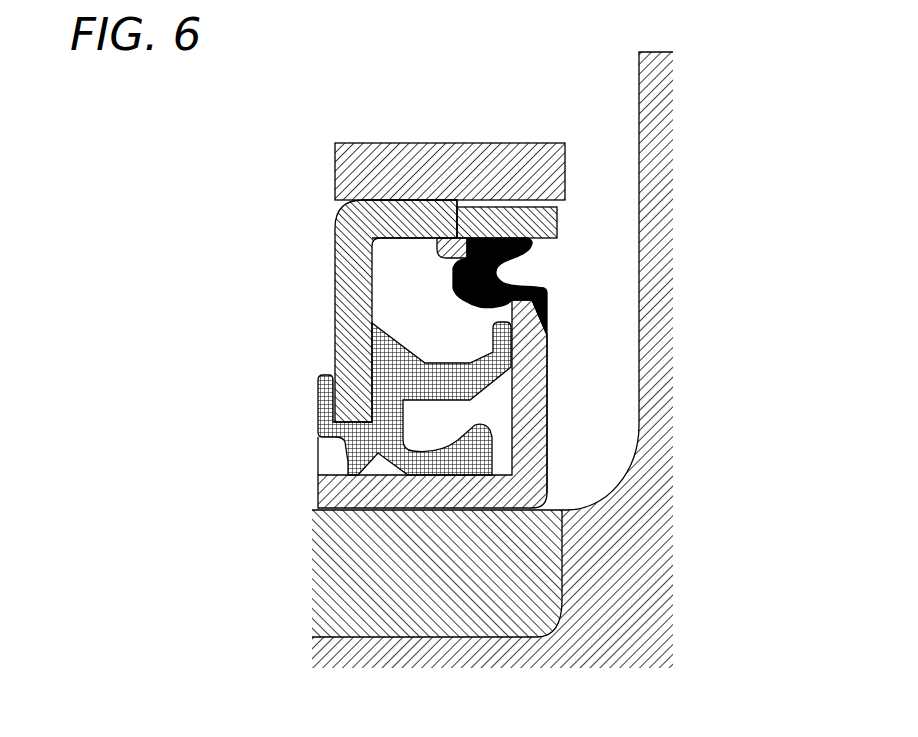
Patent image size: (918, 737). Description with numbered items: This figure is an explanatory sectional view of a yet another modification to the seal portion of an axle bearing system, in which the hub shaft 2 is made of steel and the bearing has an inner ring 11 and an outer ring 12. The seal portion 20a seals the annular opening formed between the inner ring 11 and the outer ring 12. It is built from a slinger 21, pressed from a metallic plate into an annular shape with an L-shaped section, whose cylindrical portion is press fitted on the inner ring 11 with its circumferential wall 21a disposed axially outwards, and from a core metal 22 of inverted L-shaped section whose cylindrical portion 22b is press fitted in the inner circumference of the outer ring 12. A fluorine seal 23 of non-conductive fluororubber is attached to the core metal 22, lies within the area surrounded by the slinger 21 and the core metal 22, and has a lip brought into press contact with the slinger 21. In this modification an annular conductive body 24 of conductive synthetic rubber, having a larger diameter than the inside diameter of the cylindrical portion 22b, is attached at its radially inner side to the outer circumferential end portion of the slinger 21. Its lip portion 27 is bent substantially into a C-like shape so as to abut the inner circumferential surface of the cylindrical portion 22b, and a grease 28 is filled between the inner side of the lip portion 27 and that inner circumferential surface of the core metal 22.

The hub shaft 2 is at (650, 572).
The inner ring 11 is at (508, 603).
The outer ring 12 is at (377, 143).
The seal portion 20a is at (494, 288).
The slinger 21 is at (568, 404).
The circumferential wall 21a is at (548, 375).
The core metal 22 is at (318, 245).
The cylindrical portion 22b is at (430, 197).
The fluorine seal 23 is at (390, 393).
The annular conductive body 24 is at (520, 267).
The lip portion 27 is at (510, 238).
The grease 28 is at (457, 237).